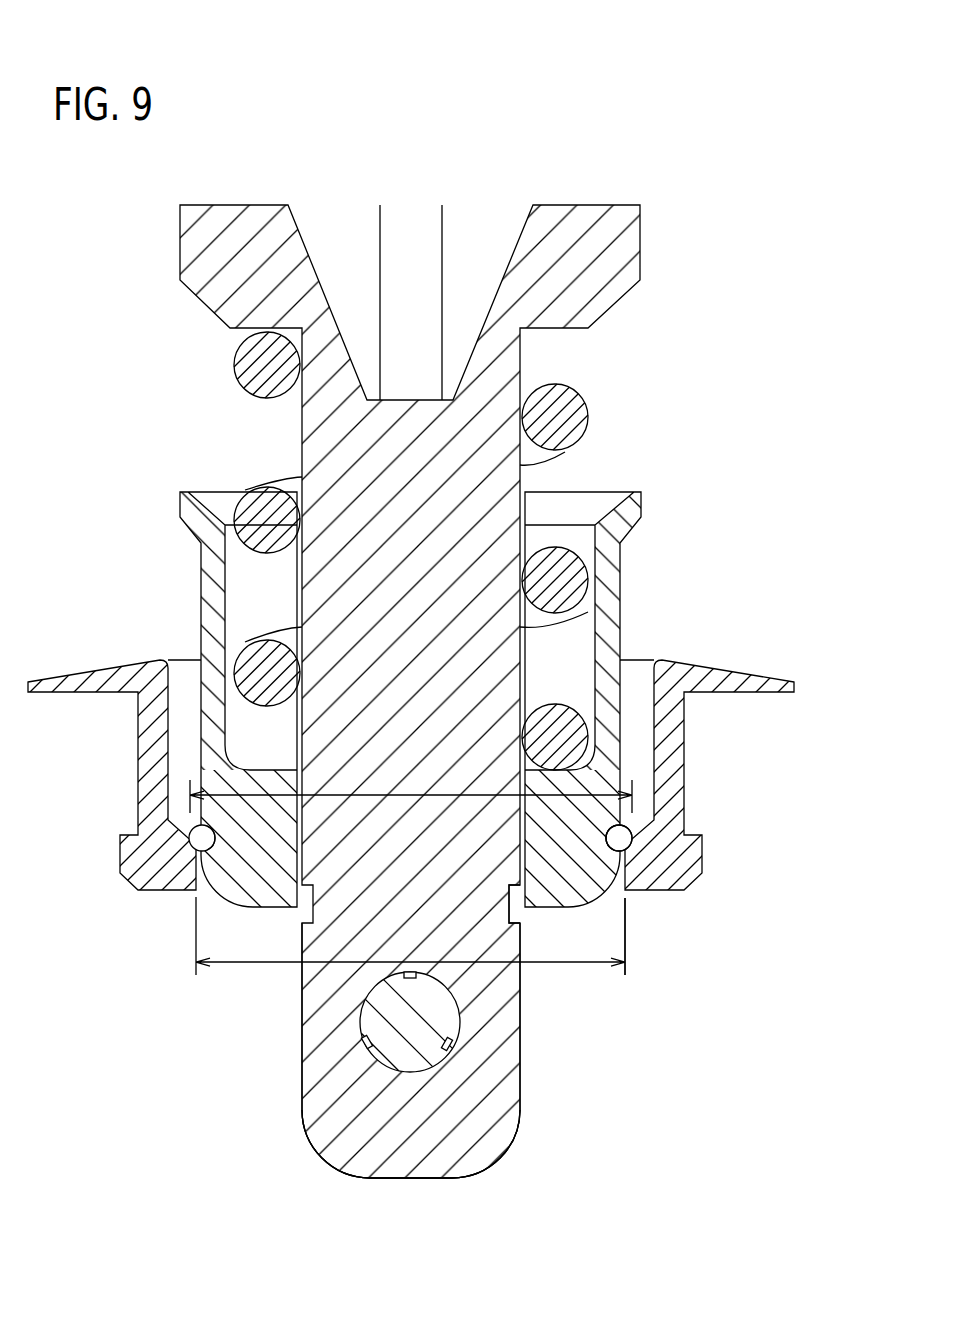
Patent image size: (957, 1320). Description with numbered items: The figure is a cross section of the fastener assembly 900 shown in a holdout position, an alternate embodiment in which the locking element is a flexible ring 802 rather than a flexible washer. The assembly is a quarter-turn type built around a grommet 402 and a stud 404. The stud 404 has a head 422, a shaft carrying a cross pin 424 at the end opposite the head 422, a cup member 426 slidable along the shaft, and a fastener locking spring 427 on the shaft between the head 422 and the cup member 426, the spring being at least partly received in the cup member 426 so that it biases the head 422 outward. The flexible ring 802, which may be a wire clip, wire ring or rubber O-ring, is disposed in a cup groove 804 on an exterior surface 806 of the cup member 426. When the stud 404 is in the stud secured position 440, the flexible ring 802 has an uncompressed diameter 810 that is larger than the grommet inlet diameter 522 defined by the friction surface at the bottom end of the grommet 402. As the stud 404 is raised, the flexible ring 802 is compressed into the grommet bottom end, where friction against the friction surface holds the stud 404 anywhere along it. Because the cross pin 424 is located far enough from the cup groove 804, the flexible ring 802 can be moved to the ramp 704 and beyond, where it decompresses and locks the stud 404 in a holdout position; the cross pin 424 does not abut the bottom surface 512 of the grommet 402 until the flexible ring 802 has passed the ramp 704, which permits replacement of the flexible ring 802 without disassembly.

The pin assembly 900 is at (682, 143).
The head 422 is at (257, 220).
The stud secured position 440 is at (300, 1008).
The stud 404 is at (410, 1178).
The cross pin 424 is at (405, 1022).
The cup member 426 is at (212, 592).
The exterior surface 806 is at (620, 592).
The fastener locking spring 427 is at (553, 732).
The bottom surface 512 is at (158, 890).
The grommet 402 is at (732, 683).
The ramp 704 is at (190, 840).
The flexible ring 802 is at (622, 840).
The uncompressed diameter 810 is at (427, 795).
The cup groove 804 is at (616, 843).
The grommet inlet diameter 522 is at (558, 970).